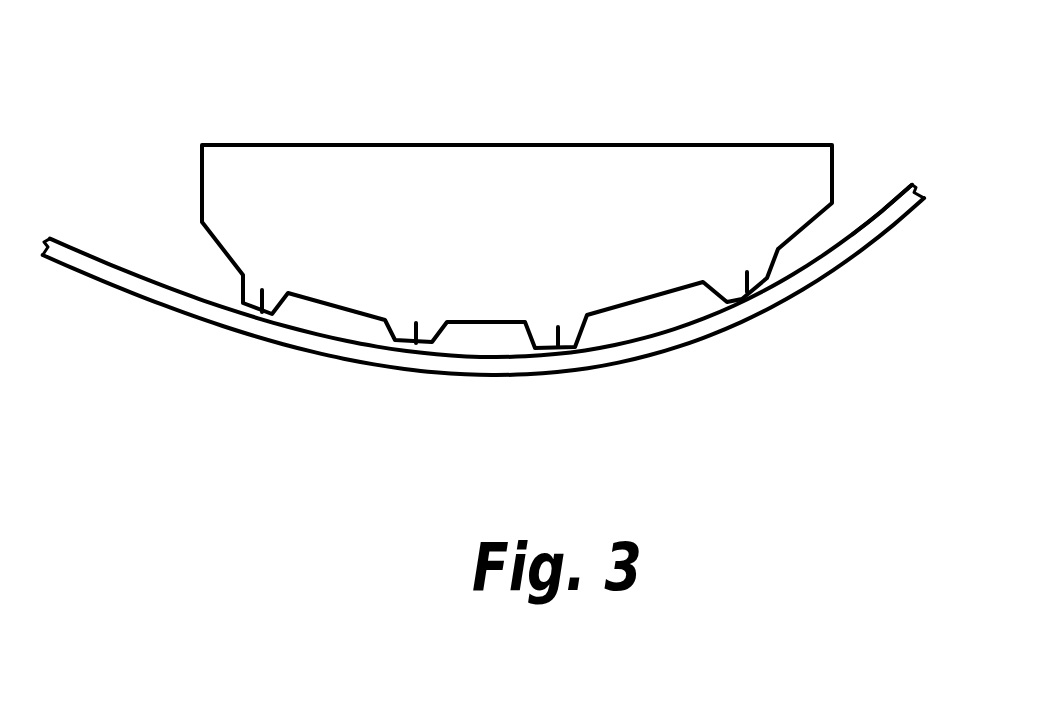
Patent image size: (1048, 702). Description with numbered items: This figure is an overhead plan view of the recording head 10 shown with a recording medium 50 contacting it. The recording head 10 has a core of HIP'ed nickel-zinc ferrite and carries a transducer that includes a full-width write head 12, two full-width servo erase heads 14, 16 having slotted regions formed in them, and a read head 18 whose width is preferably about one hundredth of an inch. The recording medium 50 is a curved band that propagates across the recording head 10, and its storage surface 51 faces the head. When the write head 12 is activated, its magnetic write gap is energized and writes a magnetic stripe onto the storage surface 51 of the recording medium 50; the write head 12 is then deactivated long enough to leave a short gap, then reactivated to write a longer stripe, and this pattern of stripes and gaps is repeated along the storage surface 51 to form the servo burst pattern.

The recording head 10 is at (235, 133).
The write head 12 is at (756, 262).
The servo erase head 14 is at (562, 312).
The servo erase head 16 is at (425, 312).
The read head 18 is at (263, 287).
The recording medium 50 is at (917, 207).
The storage surface 51 is at (900, 188).